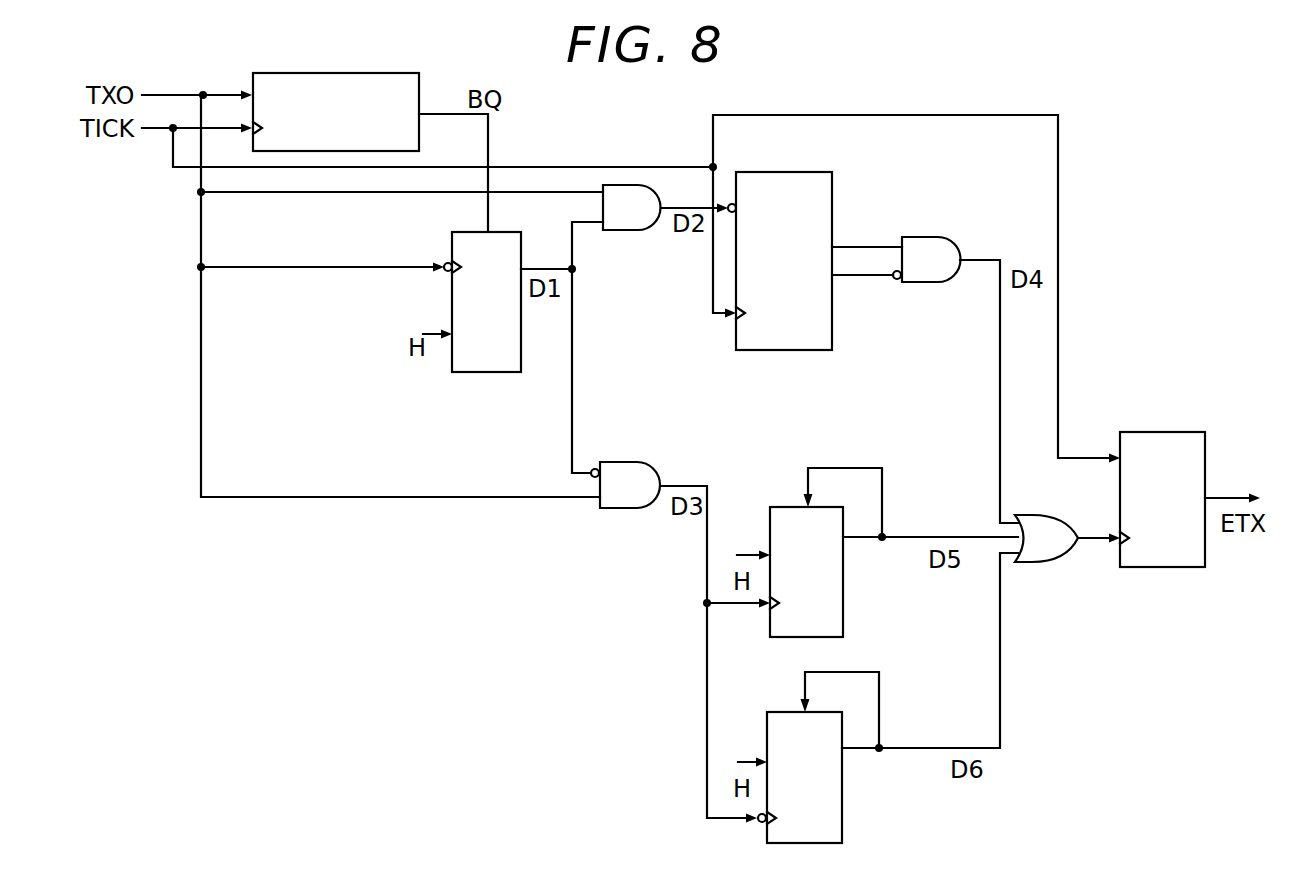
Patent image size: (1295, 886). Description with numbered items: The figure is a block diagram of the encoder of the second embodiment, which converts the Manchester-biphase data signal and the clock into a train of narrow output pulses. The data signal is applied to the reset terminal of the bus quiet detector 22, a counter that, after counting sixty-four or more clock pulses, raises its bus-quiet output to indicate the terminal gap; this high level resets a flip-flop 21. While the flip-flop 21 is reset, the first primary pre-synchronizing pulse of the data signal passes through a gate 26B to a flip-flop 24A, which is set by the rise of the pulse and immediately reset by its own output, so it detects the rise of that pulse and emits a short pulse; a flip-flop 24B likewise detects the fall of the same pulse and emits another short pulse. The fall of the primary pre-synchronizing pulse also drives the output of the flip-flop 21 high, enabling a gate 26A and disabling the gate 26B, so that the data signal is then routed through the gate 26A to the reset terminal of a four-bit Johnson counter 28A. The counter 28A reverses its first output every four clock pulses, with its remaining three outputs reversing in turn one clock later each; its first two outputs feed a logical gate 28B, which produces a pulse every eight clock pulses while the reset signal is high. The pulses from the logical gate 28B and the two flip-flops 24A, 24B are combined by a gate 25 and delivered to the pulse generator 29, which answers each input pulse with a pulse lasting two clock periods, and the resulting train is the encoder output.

The bus quiet detector 22 is at (404, 73).
The flip-flop 21 is at (503, 372).
The gate 26A is at (640, 185).
The gate 26B is at (628, 462).
The four-bit Johnson counter 28A is at (815, 172).
The logical gate 28B is at (932, 237).
The gate 25 is at (1040, 515).
The pulse generator 29 is at (1191, 432).
The flip-flop 24A is at (843, 607).
The flip-flop 24B is at (842, 818).